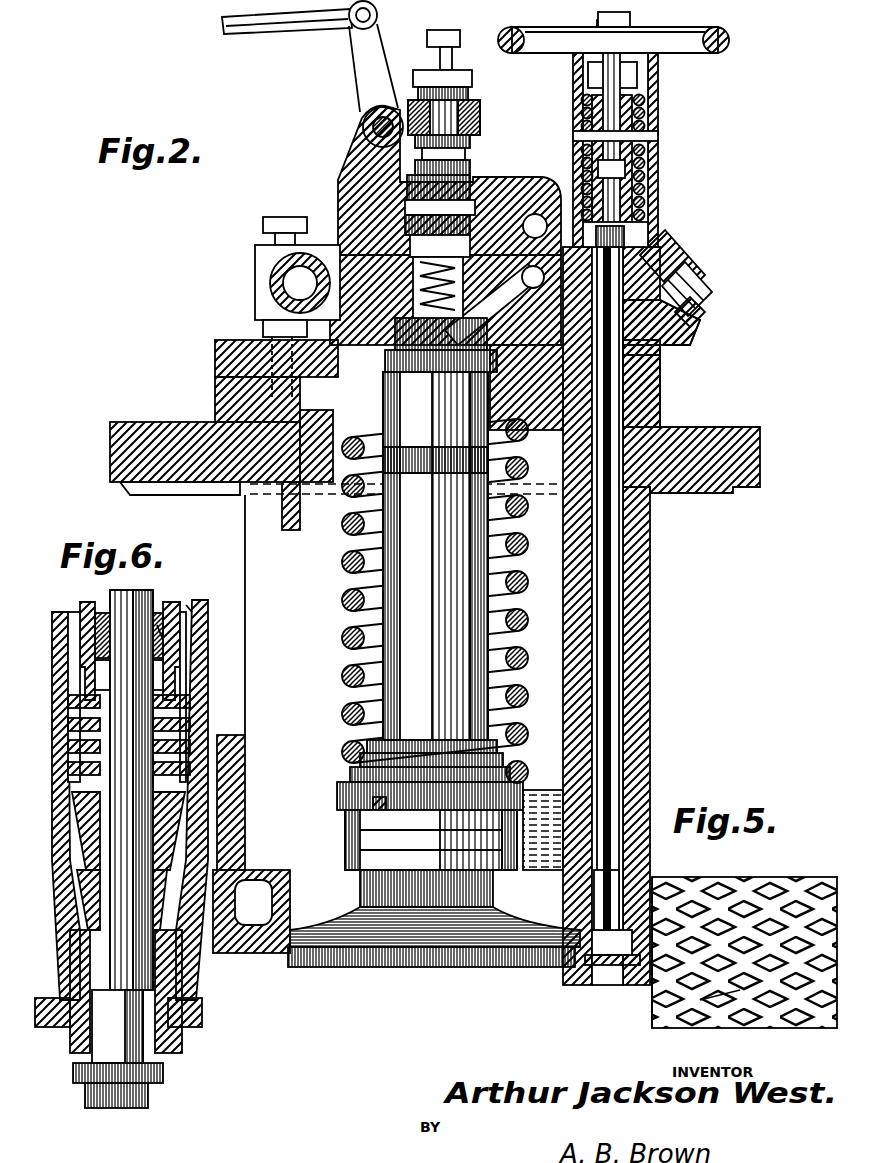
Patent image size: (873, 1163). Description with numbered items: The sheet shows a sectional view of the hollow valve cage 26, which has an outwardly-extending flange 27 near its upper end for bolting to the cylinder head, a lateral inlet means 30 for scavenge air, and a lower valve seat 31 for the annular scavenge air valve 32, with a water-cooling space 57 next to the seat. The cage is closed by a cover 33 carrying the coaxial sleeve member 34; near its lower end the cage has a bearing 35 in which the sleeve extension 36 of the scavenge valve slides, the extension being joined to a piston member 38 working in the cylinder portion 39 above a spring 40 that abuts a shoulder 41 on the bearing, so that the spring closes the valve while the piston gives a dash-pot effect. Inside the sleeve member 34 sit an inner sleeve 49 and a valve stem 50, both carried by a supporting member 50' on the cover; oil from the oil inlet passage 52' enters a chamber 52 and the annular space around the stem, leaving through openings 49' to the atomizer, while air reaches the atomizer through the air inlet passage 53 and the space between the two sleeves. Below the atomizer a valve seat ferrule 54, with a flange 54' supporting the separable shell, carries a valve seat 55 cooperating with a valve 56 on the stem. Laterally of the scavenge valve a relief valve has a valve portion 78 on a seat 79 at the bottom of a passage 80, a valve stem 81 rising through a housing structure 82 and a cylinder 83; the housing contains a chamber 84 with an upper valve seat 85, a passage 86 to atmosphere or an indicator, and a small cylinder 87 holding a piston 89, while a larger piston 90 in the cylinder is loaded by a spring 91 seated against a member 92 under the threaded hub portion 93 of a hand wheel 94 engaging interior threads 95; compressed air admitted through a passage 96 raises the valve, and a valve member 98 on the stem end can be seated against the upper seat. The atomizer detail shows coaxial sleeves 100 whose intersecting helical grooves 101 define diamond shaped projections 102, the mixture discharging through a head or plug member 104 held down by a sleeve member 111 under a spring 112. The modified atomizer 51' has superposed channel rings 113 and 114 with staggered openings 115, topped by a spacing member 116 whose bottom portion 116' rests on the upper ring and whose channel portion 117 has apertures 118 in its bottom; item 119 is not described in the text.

In FIG. 2, the valve cage 26 is at (645, 716).
In FIG. 2, the flange 27 is at (690, 432).
In FIG. 2, the lateral inlet means 30 is at (250, 540).
In FIG. 2, the valve seat 31 is at (585, 967).
In FIG. 2, the scavenge air valve 32 is at (390, 958).
In FIG. 2, the cover 33 is at (222, 357).
In FIG. 2, the sleeve member 34 is at (435, 556).
In FIG. 6, the sleeve member 34 is at (205, 618).
In FIG. 2, the bearing 35 is at (360, 832).
In FIG. 2, the sleeve extension 36 is at (358, 745).
In FIG. 2, the piston member 38 is at (330, 470).
In FIG. 2, the cylinder portion 39 is at (300, 425).
In FIG. 2, the spring 40 is at (345, 615).
In FIG. 2, the shoulder 41 is at (523, 782).
In FIG. 2, the sleeve 49 is at (441, 345).
In FIG. 6, the sleeve 49 is at (185, 606).
In FIG. 6, the openings 49' is at (124, 675).
In FIG. 2, the valve stem 50 is at (423, 225).
In FIG. 6, the valve stem 50 is at (101, 589).
In FIG. 2, the supporting member 50' is at (312, 97).
In FIG. 6, the modified atomizer 51' is at (147, 800).
In FIG. 2, the chamber 52 is at (268, 308).
In FIG. 2, the oil inlet passage 52' is at (496, 252).
In FIG. 2, the air inlet passage 53 is at (442, 174).
In FIG. 6, the valve seat ferrule 54 is at (153, 991).
In FIG. 6, the flange 54' is at (145, 1023).
In FIG. 6, the valve seat 55 is at (180, 1053).
In FIG. 6, the valve 56 is at (103, 1060).
In FIG. 2, the water-cooling space 57 is at (262, 902).
In FIG. 2, the valve portion 78 is at (643, 878).
In FIG. 2, the seat 79 is at (620, 950).
In FIG. 2, the passage 80 is at (615, 648).
In FIG. 2, the valve stem 81 is at (640, 556).
In FIG. 2, the housing structure 82 is at (672, 318).
In FIG. 2, the cylinder 83 is at (658, 108).
In FIG. 2, the chamber 84 is at (661, 337).
In FIG. 2, the upper valve seat 85 is at (690, 304).
In FIG. 2, the passage 86 is at (692, 286).
In FIG. 2, the cylinder 87 is at (645, 237).
In FIG. 2, the piston 89 is at (655, 206).
In FIG. 2, the larger piston 90 is at (658, 170).
In FIG. 2, the spring 91 is at (575, 146).
In FIG. 2, the member 92 is at (658, 88).
In FIG. 2, the threaded hub portion 93 is at (574, 73).
In FIG. 2, the hand wheel 94 is at (730, 41).
In FIG. 2, the interior threads 95 is at (577, 103).
In FIG. 2, the passage 96 is at (680, 258).
In FIG. 2, the valve member 98 is at (660, 376).
In FIG. 5, the coaxial sleeves 100 is at (722, 882).
In FIG. 5, the helical grooves 101 is at (690, 985).
In FIG. 5, the diamond shaped projections 102 is at (783, 987).
In FIG. 6, the head or plug member 104 is at (128, 880).
In FIG. 6, the sleeve member 111 is at (192, 624).
In FIG. 2, the spring 112 is at (300, 283).
In FIG. 6, the channel ring 113 is at (82, 803).
In FIG. 6, the channel ring 114 is at (80, 769).
In FIG. 6, the openings 115 is at (82, 835).
In FIG. 6, the spacing member 116 is at (162, 651).
In FIG. 6, the bottom portion 116' is at (130, 611).
In FIG. 6, the channel portion 117 is at (82, 702).
In FIG. 6, the apertures 118 is at (80, 724).
In FIG. 6, the packing ring 119 is at (80, 747).